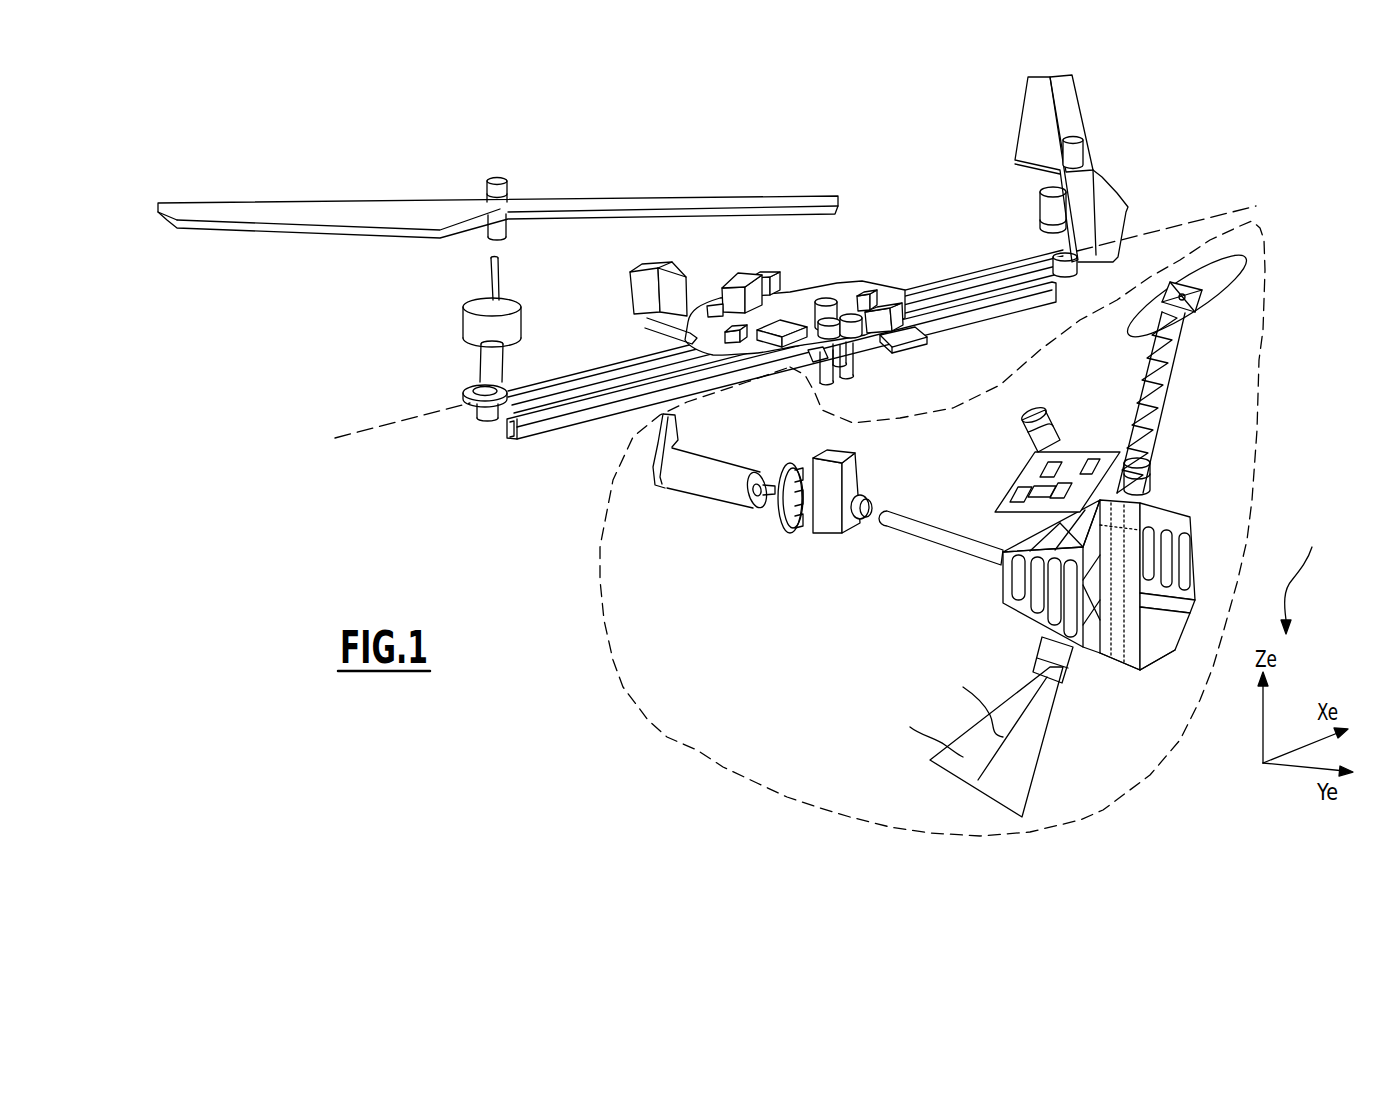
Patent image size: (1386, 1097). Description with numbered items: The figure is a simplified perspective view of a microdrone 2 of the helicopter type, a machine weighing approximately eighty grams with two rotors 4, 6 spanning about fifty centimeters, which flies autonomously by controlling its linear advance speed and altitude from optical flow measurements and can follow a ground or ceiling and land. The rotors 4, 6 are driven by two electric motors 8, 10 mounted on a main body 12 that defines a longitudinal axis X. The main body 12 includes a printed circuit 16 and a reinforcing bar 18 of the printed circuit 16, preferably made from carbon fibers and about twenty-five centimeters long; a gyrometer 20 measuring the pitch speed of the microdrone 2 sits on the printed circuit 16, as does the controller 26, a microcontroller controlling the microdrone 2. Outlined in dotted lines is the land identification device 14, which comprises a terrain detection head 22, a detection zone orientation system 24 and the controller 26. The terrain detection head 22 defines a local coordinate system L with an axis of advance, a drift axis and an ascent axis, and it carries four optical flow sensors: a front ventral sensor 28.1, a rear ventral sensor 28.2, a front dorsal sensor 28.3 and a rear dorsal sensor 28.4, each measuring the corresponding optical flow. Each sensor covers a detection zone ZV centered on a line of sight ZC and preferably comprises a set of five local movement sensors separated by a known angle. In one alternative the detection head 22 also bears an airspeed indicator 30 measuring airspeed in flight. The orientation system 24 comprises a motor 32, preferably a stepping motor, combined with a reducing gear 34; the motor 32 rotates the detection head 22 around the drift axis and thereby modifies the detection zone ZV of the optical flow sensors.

The microdrone 2 is at (748, 112).
The rotor 4 is at (471, 184).
The rotor 6 is at (1128, 160).
The electric motor 8 is at (460, 348).
The electric motor 10 is at (1016, 213).
The main body 12 is at (732, 392).
The land identification device 14 is at (667, 737).
The printed circuit 16 is at (462, 406).
The reinforcing bar 18 is at (530, 427).
The gyrometer 20 is at (748, 286).
The terrain detection head 22 is at (980, 604).
The detection zone orientation system 24 is at (762, 511).
The controller 26 is at (791, 325).
The front ventral sensor 28.1 is at (1177, 655).
The rear ventral sensor 28.2 is at (1067, 663).
The front dorsal sensor 28.3 is at (1145, 478).
The rear dorsal sensor 28.4 is at (1080, 420).
The airspeed indicator 30 is at (1176, 404).
The motor 32 is at (707, 482).
The reducing gear 34 is at (807, 530).
The longitudinal axis X is at (793, 318).
The local coordinate system L is at (1300, 575).
The line of sight ZC is at (971, 698).
The detection zone ZV is at (921, 730).